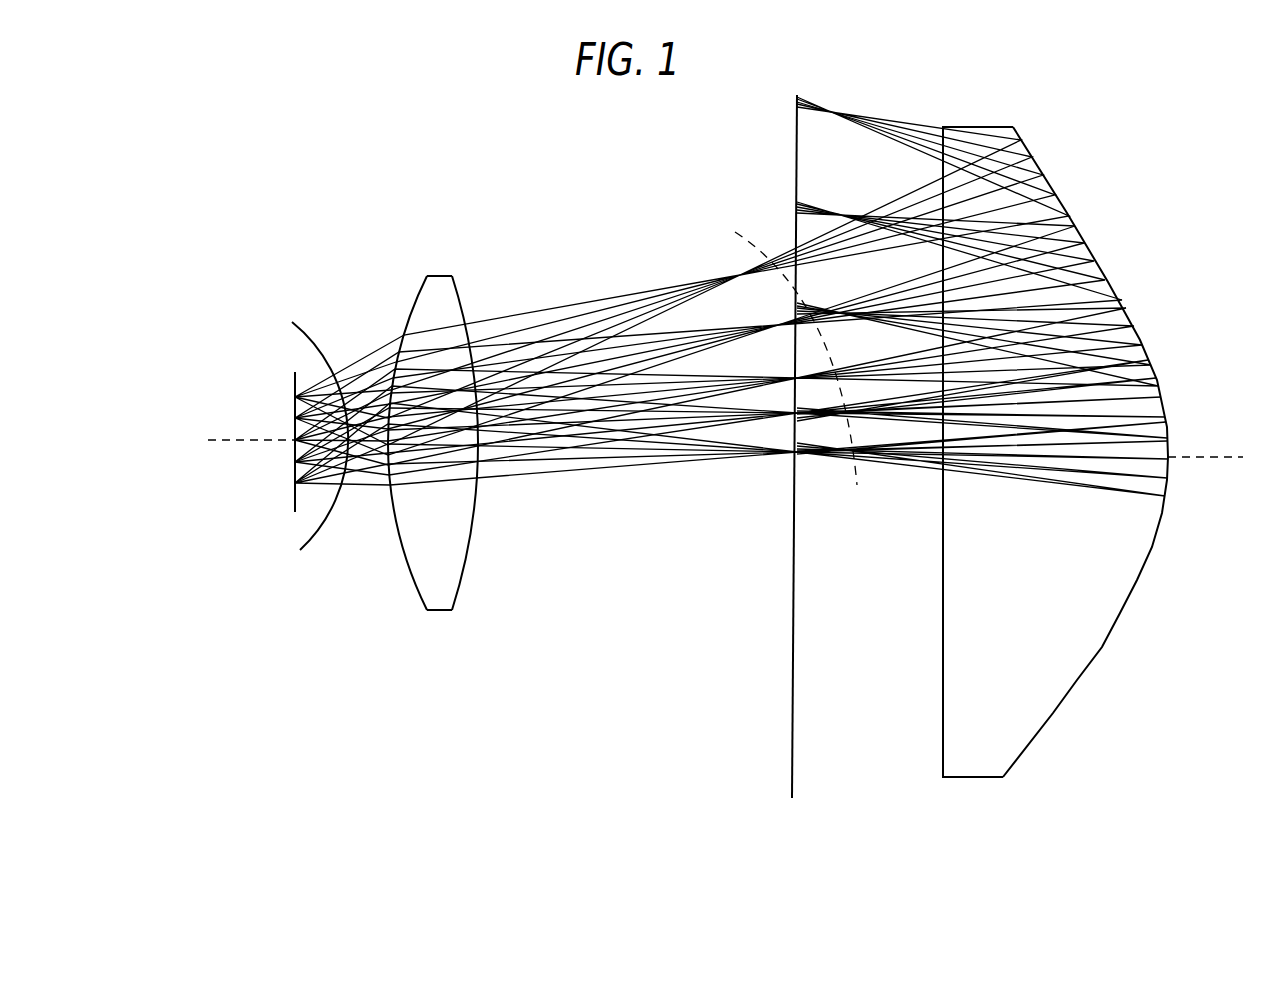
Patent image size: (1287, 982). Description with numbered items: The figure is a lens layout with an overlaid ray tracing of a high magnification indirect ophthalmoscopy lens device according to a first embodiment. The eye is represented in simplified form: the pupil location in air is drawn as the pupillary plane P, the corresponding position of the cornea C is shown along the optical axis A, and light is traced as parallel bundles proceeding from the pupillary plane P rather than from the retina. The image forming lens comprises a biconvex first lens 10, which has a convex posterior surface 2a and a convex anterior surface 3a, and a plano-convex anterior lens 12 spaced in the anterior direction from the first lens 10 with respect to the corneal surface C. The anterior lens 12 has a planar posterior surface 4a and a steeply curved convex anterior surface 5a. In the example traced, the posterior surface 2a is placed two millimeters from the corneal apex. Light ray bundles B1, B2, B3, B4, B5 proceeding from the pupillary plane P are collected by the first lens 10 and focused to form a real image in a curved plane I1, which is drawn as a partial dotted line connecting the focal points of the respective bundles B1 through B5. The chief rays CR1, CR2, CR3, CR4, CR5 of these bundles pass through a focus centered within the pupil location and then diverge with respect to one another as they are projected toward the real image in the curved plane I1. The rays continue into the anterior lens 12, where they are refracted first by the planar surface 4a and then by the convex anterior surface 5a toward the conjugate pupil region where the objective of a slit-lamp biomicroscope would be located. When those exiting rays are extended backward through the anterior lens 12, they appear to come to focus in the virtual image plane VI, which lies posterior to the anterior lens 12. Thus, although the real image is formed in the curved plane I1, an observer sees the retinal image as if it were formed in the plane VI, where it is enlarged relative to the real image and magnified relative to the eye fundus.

The pupillary plane P is at (295, 388).
The cornea C is at (310, 333).
The convex posterior surface 2a is at (418, 293).
The convex anterior surface 3a is at (463, 293).
The biconvex first lens 10 is at (441, 434).
The chief ray CR1 is at (695, 267).
The chief ray CR2 is at (683, 347).
The chief ray CR3 is at (757, 357).
The chief ray CR4 is at (767, 432).
The chief ray CR5 is at (703, 448).
The light ray bundle B1 is at (682, 271).
The light ray bundle B2 is at (708, 328).
The light ray bundle B3 is at (726, 373).
The light ray bundle B4 is at (731, 441).
The light ray bundle B5 is at (731, 484).
The curved image plane I1 is at (750, 247).
The virtual image plane VI is at (792, 143).
The planar posterior surface 4a is at (943, 582).
The convex anterior surface 5a is at (1098, 452).
The plano-convex anterior lens 12 is at (1085, 668).
The optical axis A is at (1243, 457).